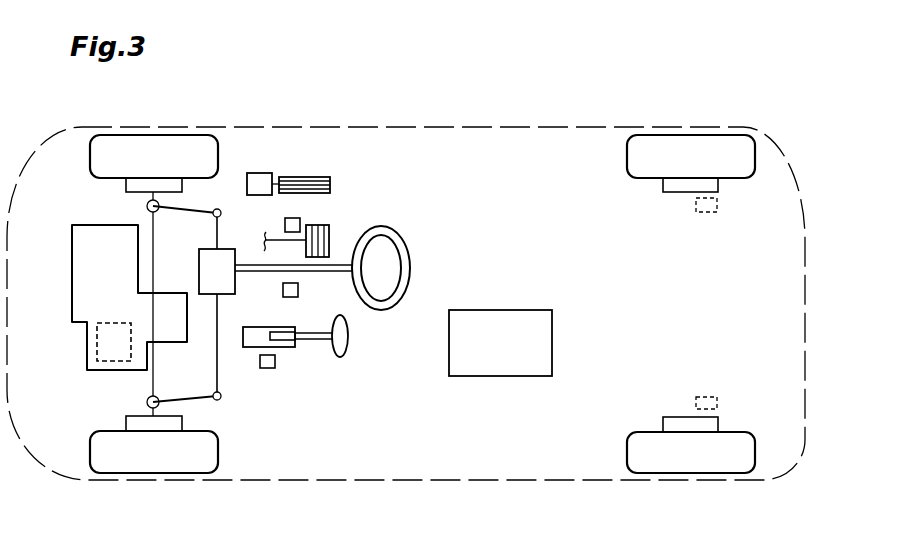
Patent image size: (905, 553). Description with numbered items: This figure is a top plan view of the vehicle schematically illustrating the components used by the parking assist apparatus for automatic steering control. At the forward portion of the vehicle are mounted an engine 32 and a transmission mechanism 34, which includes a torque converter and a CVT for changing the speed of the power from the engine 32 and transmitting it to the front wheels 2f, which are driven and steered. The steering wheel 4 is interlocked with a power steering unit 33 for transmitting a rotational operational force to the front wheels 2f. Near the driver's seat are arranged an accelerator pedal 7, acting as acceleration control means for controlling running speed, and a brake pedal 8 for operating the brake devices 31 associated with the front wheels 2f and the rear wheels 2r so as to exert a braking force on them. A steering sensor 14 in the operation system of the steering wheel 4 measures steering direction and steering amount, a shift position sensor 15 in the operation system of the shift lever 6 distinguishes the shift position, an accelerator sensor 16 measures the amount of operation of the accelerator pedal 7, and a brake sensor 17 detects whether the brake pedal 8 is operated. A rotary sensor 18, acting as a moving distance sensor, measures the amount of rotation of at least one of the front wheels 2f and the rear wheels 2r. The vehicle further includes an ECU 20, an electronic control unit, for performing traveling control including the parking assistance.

The front wheels 2f is at (155, 133).
The rear wheels 2r is at (688, 134).
The steering wheel 4 is at (410, 263).
The shift lever 6 is at (348, 336).
The accelerator pedal 7 is at (318, 177).
The brake pedal 8 is at (330, 232).
The steering sensor 14 is at (285, 297).
The shift position sensor 15 is at (276, 360).
The accelerator sensor 16 is at (262, 173).
The brake sensor 17 is at (285, 225).
The rotary sensor 18 is at (706, 212).
The ECU 20 is at (500, 310).
The brake devices 31 is at (123, 185).
The engine 32 is at (116, 373).
The power steering unit 33 is at (199, 286).
The transmission mechanism 34 is at (97, 343).